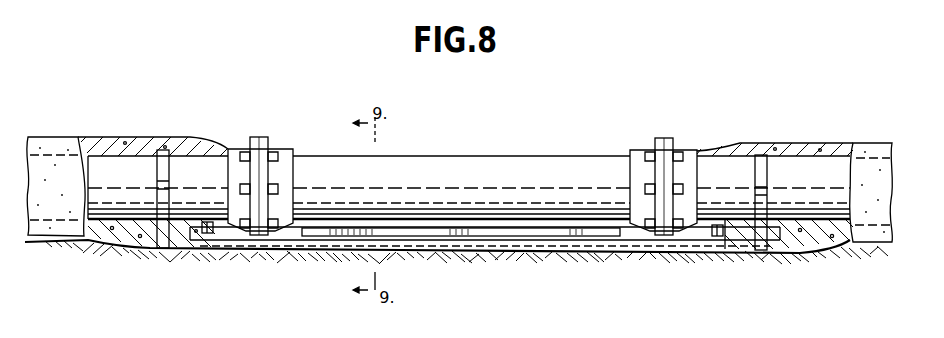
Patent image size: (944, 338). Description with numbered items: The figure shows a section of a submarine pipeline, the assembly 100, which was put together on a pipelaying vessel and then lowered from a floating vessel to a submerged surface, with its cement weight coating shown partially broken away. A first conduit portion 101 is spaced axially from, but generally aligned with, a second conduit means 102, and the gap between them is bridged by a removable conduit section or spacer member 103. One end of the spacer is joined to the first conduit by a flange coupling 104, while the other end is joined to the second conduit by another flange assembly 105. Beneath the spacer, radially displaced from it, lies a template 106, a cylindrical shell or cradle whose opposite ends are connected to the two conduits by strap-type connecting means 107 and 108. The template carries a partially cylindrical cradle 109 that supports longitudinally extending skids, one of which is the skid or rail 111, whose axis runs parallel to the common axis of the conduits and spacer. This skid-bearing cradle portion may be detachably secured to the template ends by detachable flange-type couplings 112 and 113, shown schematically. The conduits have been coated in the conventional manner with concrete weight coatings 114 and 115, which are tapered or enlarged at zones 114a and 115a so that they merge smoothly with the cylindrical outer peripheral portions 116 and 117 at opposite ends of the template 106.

The assembly 100 is at (453, 153).
The first conduit portion 101 is at (204, 167).
The second conduit means 102 is at (710, 168).
The removable conduit section or spacer member 103 is at (533, 157).
The flange coupling 104 is at (256, 227).
The flange assembly 105 is at (660, 232).
The template 106 is at (527, 243).
The connecting means 107 is at (162, 156).
The connecting means 108 is at (762, 158).
The partially cylindrical cradle 109 is at (472, 238).
The skid or rail 111 is at (575, 234).
The detachable flange-type coupling 112 is at (207, 234).
The detachable flange-type coupling 113 is at (717, 237).
The concrete weight coating 114 is at (82, 139).
The tapered or enlarged zone 114a is at (118, 239).
The concrete weight coating 115 is at (876, 242).
The tapered or enlarged zone 115a is at (816, 246).
The cylindrical outer peripheral portion 116 is at (174, 245).
The cylindrical outer peripheral portion 117 is at (748, 240).